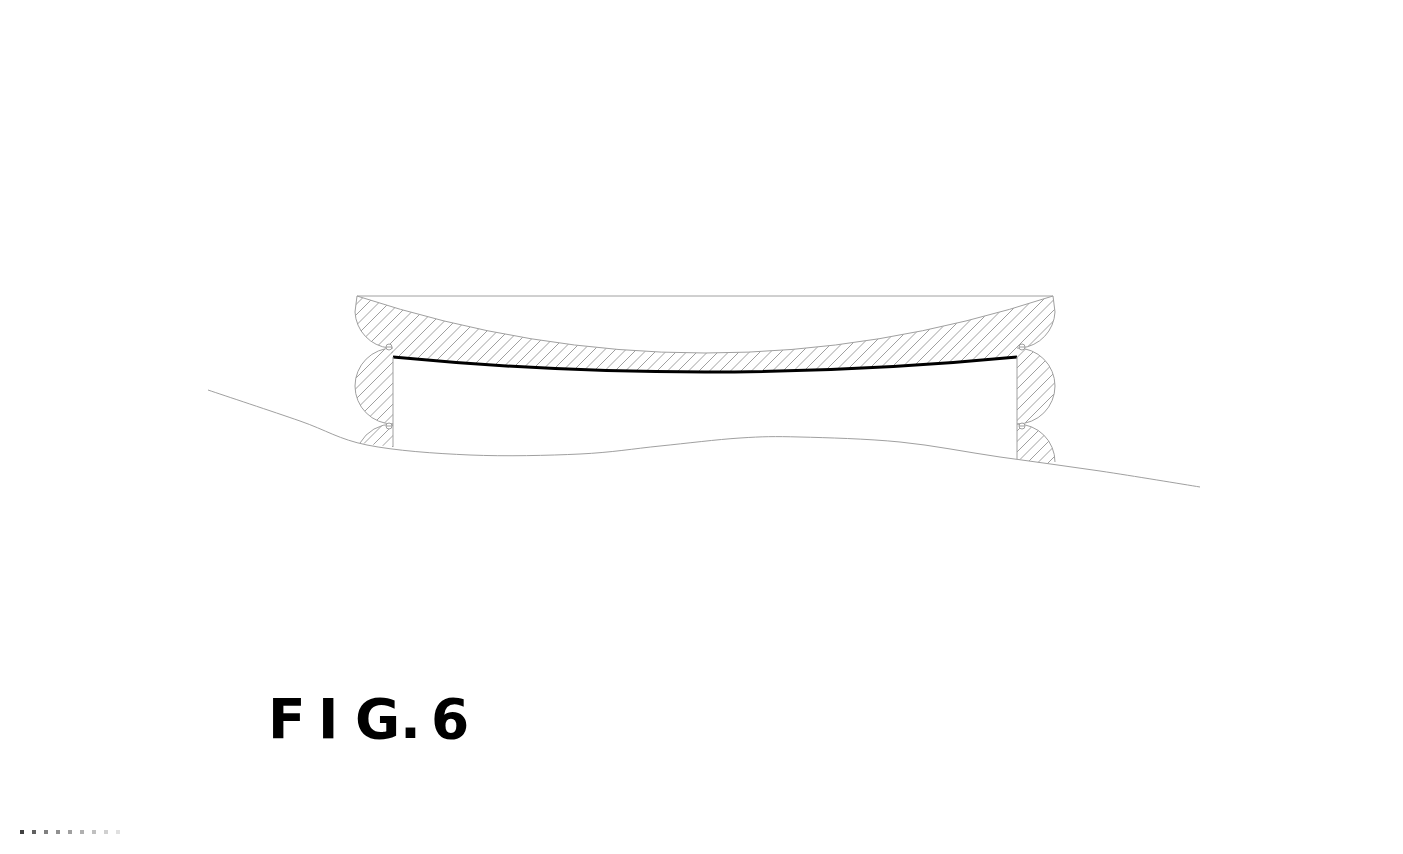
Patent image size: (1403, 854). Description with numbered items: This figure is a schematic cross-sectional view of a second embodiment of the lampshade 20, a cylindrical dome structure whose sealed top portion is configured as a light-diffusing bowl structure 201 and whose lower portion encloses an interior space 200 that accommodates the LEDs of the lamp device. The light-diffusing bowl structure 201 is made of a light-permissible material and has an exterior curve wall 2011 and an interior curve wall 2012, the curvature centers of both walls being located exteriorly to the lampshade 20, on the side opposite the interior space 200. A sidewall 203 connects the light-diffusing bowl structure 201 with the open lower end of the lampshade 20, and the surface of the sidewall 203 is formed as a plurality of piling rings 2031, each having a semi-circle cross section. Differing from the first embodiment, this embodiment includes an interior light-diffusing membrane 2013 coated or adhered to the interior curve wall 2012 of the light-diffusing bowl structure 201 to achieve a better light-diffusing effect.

The lampshade 20 is at (721, 292).
The interior space 200 is at (578, 426).
The light-diffusing bowl structure 201 is at (721, 312).
The exterior curve wall 2011 is at (662, 355).
The interior curve wall 2012 is at (940, 358).
The interior light-diffusing membrane 2013 is at (802, 373).
The sidewall 203 is at (387, 397).
The piling rings 2031 is at (1037, 387).